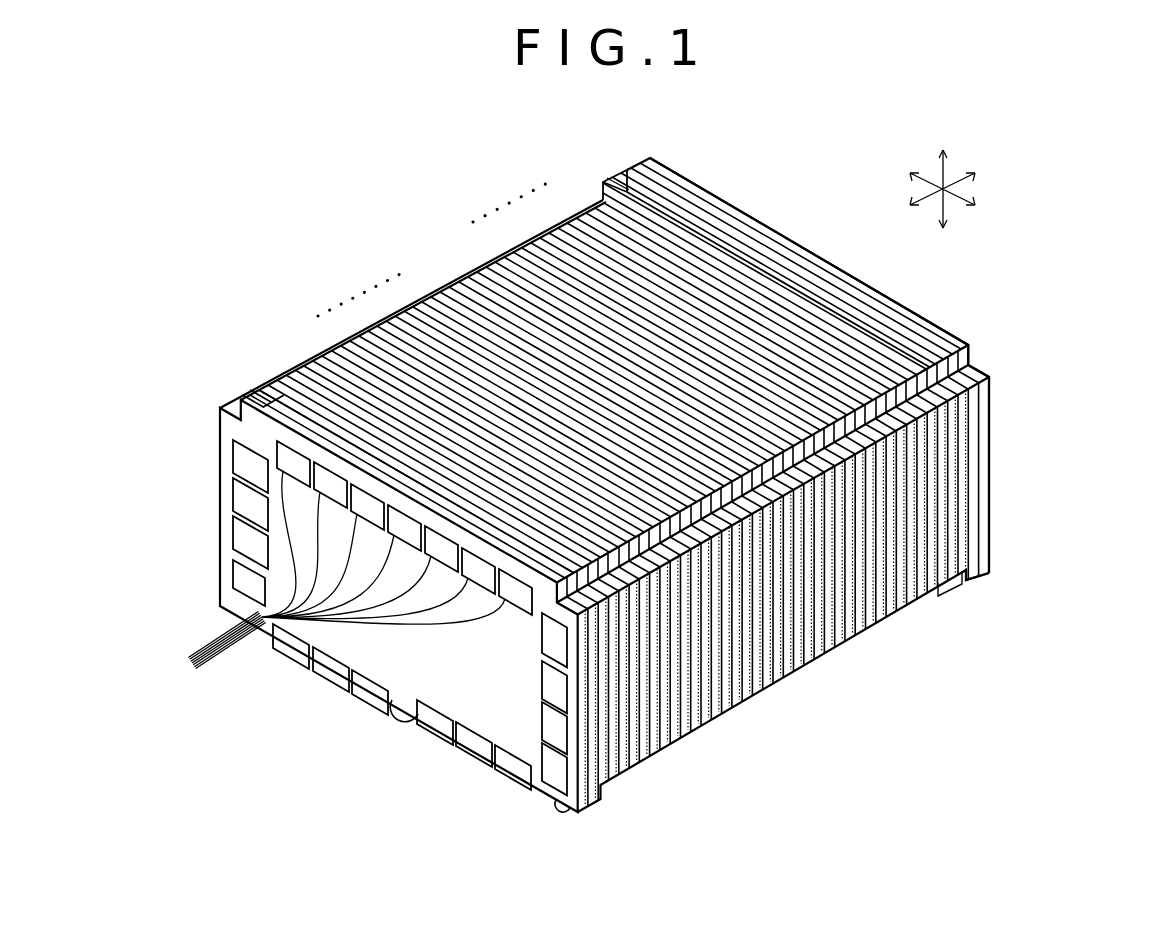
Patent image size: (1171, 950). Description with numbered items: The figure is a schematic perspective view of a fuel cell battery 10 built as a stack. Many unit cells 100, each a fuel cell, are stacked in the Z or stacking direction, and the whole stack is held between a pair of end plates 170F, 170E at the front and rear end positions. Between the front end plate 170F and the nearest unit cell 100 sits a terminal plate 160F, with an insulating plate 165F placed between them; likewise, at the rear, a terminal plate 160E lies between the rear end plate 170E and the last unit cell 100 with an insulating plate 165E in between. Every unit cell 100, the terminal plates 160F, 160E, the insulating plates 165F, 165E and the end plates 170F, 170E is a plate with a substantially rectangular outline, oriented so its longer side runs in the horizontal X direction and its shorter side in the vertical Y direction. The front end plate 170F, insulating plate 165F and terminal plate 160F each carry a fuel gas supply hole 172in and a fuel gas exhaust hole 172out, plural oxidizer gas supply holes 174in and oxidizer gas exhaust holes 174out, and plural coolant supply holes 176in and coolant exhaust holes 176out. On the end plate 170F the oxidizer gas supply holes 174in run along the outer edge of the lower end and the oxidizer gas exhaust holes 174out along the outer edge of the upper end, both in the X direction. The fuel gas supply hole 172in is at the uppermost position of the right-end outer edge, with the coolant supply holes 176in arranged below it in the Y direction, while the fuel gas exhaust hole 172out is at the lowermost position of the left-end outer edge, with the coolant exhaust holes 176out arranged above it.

The fuel cell battery 10 is at (212, 168).
The unit cell 100 is at (457, 307).
The terminal plate 160E is at (603, 182).
The terminal plate 160F is at (268, 383).
The insulating plate 165E is at (616, 170).
The insulating plate 165F is at (245, 392).
The end plate 170E is at (664, 166).
The end plate 170F is at (226, 404).
The fuel gas supply hole 172in is at (553, 637).
The fuel gas exhaust hole 172out is at (247, 578).
The oxidizer gas supply holes 174in is at (513, 769).
The oxidizer gas exhaust holes 174out is at (329, 576).
The coolant supply holes 176in is at (553, 757).
The coolant exhaust holes 176out is at (247, 533).